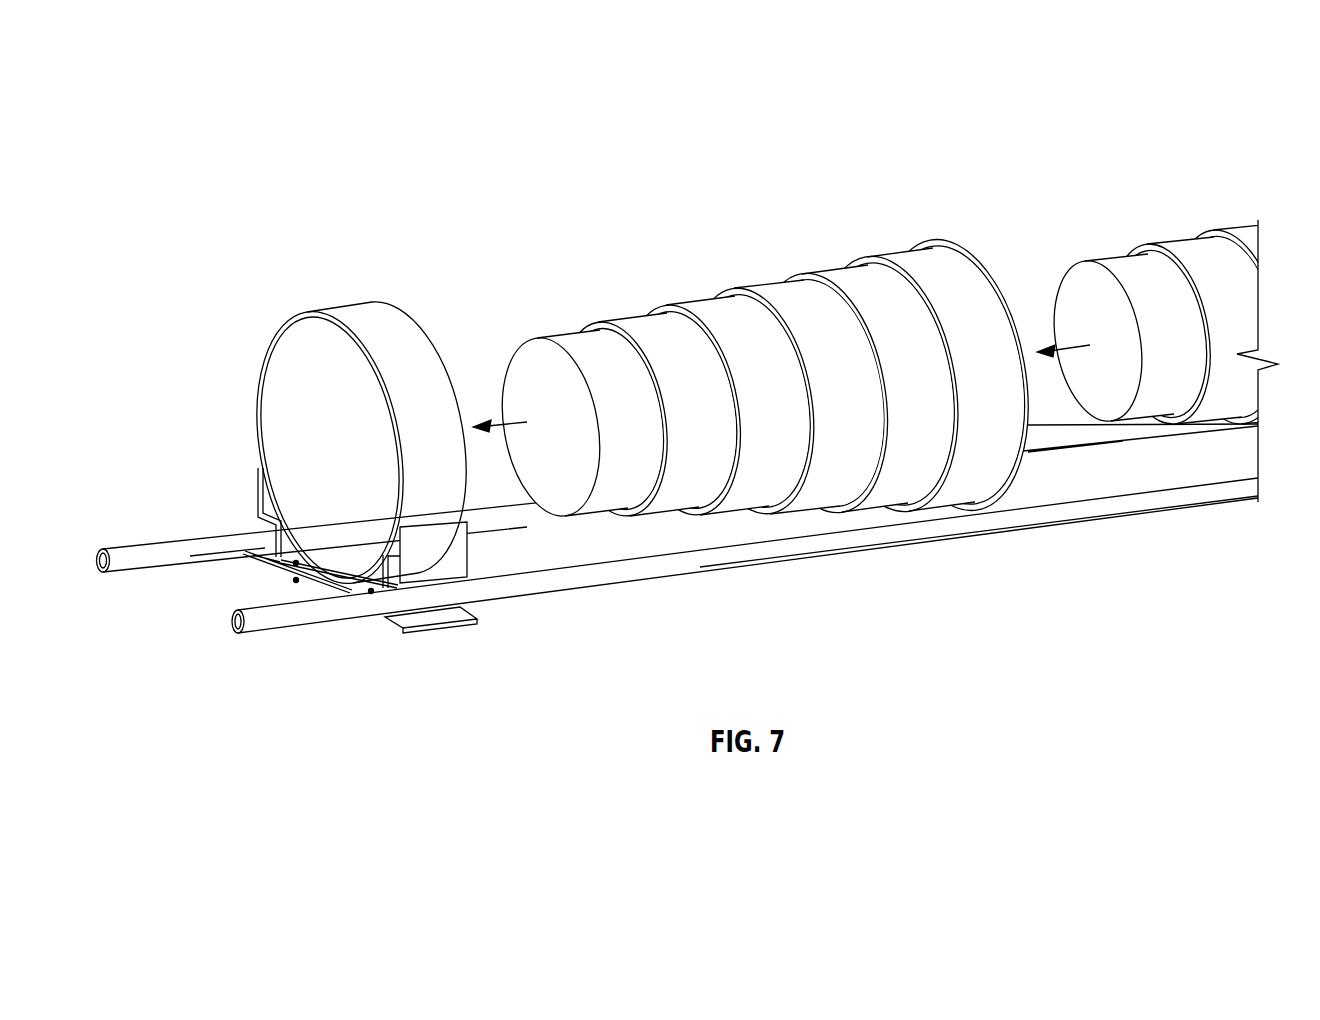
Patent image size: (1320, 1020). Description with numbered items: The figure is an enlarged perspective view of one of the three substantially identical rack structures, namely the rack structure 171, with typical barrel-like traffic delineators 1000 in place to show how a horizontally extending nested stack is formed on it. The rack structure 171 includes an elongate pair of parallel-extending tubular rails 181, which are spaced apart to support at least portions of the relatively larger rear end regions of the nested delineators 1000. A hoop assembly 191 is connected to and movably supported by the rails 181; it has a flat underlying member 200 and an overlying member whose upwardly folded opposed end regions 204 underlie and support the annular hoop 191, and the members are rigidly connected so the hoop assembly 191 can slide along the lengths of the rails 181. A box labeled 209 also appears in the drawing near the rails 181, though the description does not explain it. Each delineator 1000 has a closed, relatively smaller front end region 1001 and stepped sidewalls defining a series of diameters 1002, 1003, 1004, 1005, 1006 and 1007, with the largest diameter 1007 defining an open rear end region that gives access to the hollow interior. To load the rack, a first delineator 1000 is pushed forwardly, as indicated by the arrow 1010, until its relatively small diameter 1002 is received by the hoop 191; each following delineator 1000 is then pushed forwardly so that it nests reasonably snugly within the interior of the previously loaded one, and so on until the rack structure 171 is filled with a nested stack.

The rack structure 171 is at (678, 569).
The rails 181 is at (520, 615).
The hoop assembly 191 is at (396, 312).
The flat underlying member 200 is at (432, 632).
The upwardly folded opposed end regions 204 is at (258, 497).
The box 209 is at (456, 567).
The barrel-like traffic delineator 1000 is at (882, 316).
The front end region 1001 is at (527, 346).
The diameter 1002 is at (572, 334).
The diameter 1003 is at (643, 316).
The diameter 1004 is at (710, 299).
The diameter 1005 is at (773, 283).
The diameter 1006 is at (847, 268).
The diameter 1007 is at (920, 250).
The arrow 1010 is at (502, 417).